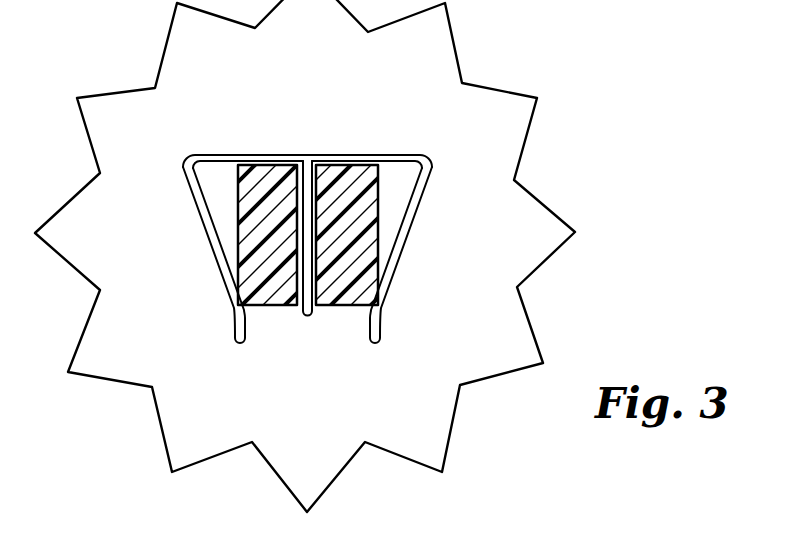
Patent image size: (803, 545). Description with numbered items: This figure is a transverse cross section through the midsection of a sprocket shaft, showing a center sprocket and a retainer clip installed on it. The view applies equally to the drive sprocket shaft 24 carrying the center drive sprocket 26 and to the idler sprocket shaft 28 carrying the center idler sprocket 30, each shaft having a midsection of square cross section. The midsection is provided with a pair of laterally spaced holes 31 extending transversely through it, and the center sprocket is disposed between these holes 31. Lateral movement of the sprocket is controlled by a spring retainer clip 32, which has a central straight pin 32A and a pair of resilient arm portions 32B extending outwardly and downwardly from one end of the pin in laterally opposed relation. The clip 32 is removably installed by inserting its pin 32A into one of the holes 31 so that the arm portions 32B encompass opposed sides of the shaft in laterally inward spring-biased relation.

The center drive sprocket 26 is at (340, 256).
The center idler sprocket 30 is at (532, 137).
The spring retainer clip 32 is at (316, 222).
The central straight pin 32A is at (305, 207).
The resilient arm portions 32B is at (205, 247).
The drive sprocket shaft 24 is at (313, 264).
The idler sprocket shaft 28 is at (270, 297).
The holes 31 is at (308, 243).